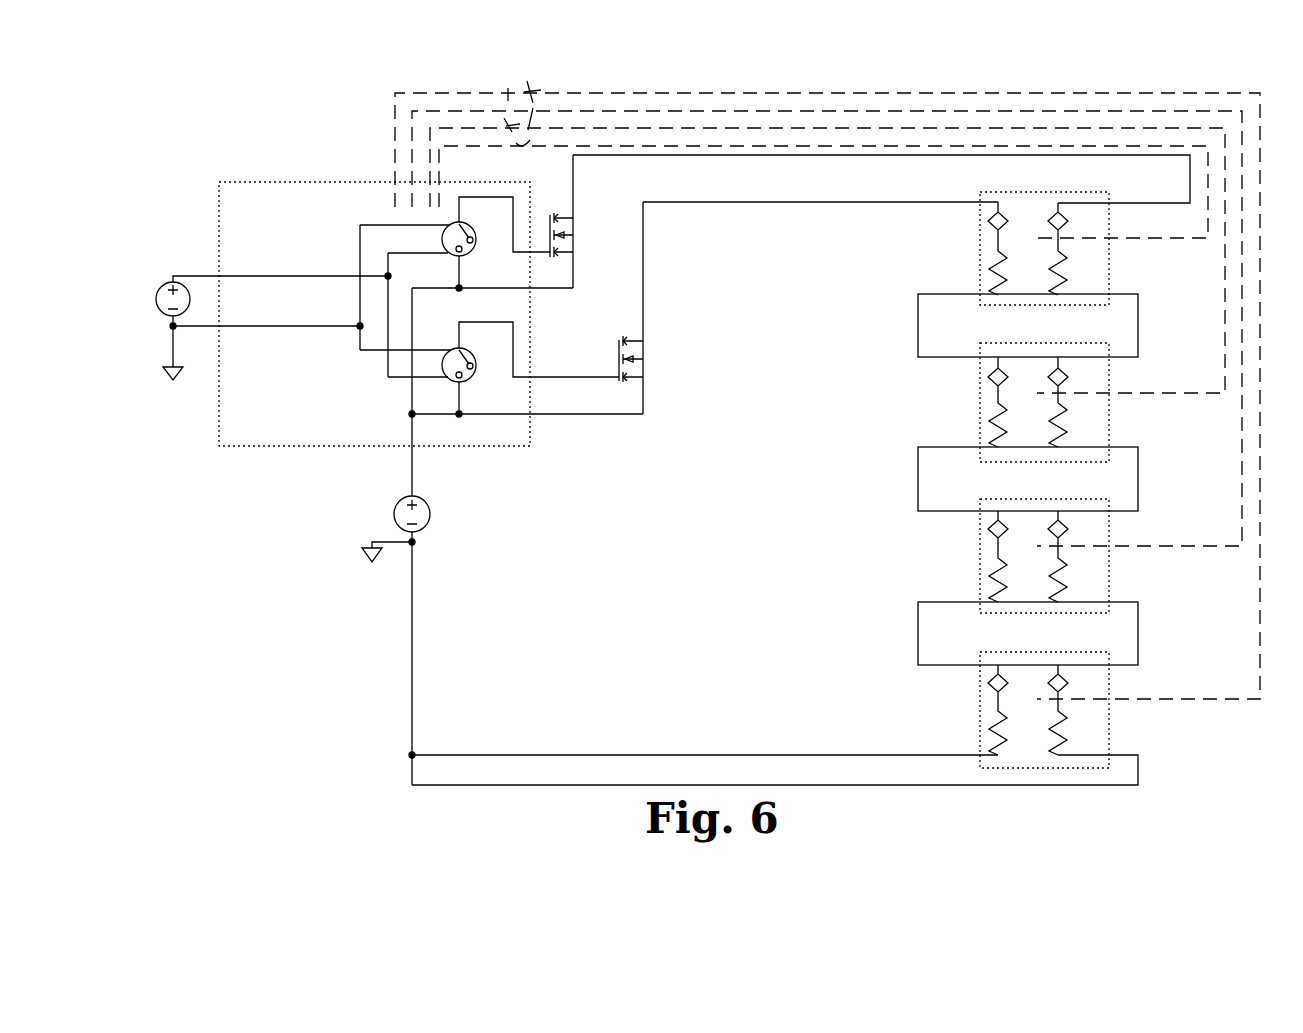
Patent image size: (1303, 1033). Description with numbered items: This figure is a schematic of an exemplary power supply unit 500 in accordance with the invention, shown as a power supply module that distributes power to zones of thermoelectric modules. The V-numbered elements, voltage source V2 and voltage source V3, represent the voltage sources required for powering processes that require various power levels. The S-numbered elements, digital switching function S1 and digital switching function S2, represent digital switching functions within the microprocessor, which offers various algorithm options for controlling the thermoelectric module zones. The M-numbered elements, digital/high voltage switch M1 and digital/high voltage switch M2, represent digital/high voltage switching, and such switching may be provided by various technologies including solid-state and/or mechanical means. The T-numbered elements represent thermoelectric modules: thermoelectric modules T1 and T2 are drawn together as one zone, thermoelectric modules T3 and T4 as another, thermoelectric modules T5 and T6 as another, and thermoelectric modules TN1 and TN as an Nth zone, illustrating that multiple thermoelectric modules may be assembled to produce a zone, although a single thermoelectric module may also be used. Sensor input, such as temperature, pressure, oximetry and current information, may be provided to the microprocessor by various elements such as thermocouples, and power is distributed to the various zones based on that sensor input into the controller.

The heating control circuit 500 is at (699, 423).
The voltage source V2 is at (264, 322).
The voltage source V3 is at (406, 519).
The digital switching function S1 is at (526, 369).
The digital switching function S2 is at (492, 244).
The digital/high voltage switch M1 is at (662, 308).
The digital/high voltage switch M2 is at (592, 221).
The thermoelectric module T1 is at (1015, 248).
The thermoelectric module T2 is at (1075, 249).
The thermoelectric module T3 is at (1015, 403).
The thermoelectric module T4 is at (1075, 403).
The thermoelectric module T5 is at (1015, 556).
The thermoelectric module T6 is at (1075, 556).
The thermoelectric module TN1 is at (1019, 710).
The thermoelectric module TN is at (1075, 710).